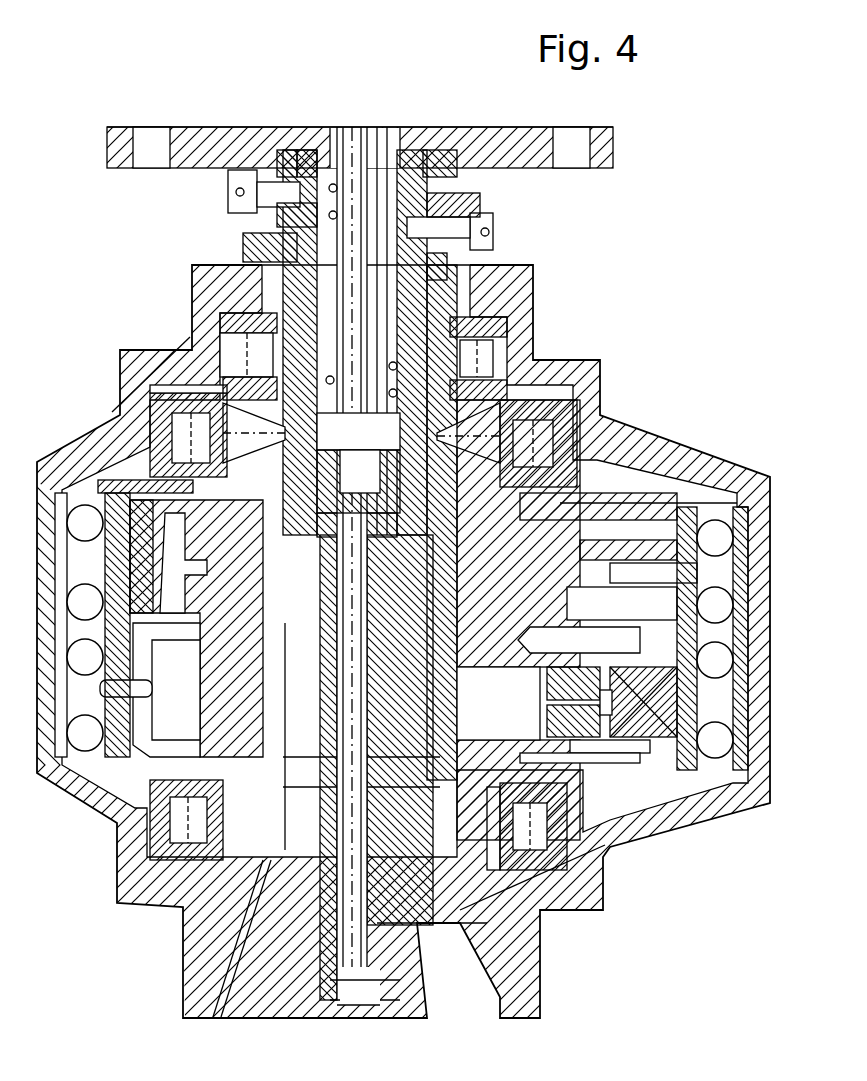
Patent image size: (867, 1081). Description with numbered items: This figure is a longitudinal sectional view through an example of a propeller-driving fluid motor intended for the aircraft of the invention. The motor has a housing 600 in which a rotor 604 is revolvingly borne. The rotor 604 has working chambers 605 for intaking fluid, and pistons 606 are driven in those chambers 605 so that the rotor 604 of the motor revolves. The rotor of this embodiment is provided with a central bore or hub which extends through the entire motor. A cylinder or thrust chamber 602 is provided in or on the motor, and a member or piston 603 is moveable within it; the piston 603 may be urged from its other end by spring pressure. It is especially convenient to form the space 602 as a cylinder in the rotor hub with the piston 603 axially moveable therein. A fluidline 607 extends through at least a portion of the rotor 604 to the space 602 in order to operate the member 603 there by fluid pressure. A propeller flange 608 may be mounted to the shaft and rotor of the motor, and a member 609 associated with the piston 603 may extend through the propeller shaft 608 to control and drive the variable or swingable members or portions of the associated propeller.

The housing 600 is at (613, 433).
The cylinder or thrust chamber 602 is at (307, 537).
The piston 603 is at (312, 440).
The rotor 604 is at (535, 555).
The working chambers 605 is at (466, 716).
The pistons 606 is at (550, 684).
The fluidline 607 is at (353, 977).
The propeller flange 608 is at (530, 162).
The member 609 is at (353, 142).